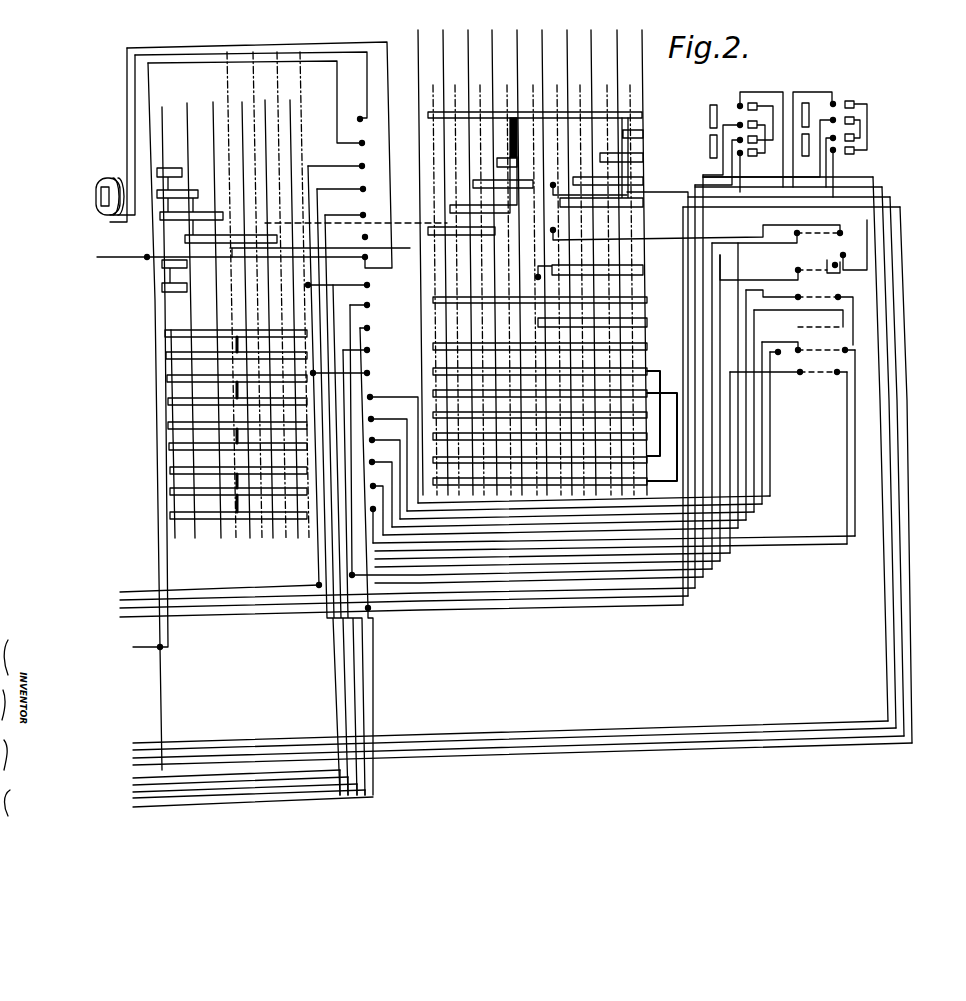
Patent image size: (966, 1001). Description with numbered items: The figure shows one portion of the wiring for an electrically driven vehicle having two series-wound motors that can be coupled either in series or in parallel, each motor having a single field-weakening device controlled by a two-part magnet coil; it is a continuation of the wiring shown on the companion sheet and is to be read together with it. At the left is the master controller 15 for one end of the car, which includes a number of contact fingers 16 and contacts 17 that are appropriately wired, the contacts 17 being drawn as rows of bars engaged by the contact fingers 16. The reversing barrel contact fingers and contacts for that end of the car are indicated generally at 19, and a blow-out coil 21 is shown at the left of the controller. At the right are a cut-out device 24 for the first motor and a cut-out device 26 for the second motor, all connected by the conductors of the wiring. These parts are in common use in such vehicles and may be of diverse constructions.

The bus conductors 15 is at (370, 358).
The relay contacts 16 is at (366, 213).
The contact bars 17 is at (166, 355).
The relay units 19 is at (781, 132).
The coil device 21 is at (105, 177).
The switch contacts 24 is at (792, 372).
The switch contacts 26 is at (789, 282).